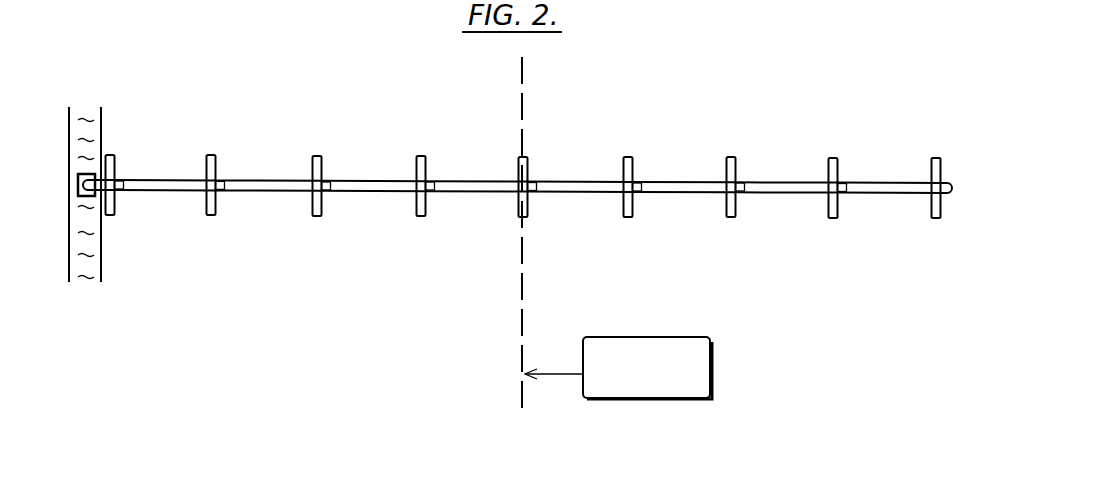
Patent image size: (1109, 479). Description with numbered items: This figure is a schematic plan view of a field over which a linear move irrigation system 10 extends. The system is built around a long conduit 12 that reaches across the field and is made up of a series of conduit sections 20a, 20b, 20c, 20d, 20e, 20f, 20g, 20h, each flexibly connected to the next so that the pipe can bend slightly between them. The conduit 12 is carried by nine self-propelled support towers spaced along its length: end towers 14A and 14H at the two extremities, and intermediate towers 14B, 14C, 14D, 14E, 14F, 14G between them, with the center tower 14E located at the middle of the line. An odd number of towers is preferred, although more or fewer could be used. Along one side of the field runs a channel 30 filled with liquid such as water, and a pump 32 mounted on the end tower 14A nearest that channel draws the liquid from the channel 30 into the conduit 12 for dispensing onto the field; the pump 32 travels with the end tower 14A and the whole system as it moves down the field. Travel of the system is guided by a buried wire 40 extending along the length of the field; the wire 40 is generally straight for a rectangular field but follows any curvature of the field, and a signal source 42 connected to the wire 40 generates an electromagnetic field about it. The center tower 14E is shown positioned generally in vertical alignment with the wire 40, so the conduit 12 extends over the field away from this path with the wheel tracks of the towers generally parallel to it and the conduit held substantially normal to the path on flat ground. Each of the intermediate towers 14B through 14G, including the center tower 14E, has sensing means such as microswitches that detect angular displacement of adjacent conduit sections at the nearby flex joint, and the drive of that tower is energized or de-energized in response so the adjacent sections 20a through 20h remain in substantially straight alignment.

The irrigation system 10 is at (286, 123).
The conduit 12 is at (517, 154).
The end tower 14A is at (117, 210).
The intermediate tower 14B is at (207, 211).
The intermediate tower 14C is at (313, 211).
The intermediate tower 14D is at (417, 211).
The center tower 14E is at (518, 212).
The intermediate tower 14F is at (624, 213).
The intermediate tower 14G is at (826, 213).
The end tower 14H is at (930, 213).
The conduit section 20a is at (149, 180).
The conduit section 20b is at (255, 180).
The conduit section 20c is at (388, 158).
The conduit section 20d is at (490, 158).
The conduit section 20e is at (563, 182).
The conduit section 20f is at (696, 155).
The conduit section 20g is at (796, 156).
The conduit section 20h is at (893, 165).
The channel 30 is at (92, 127).
The pump 32 is at (93, 177).
The buried wire 40 is at (522, 304).
The signal source 42 is at (642, 337).